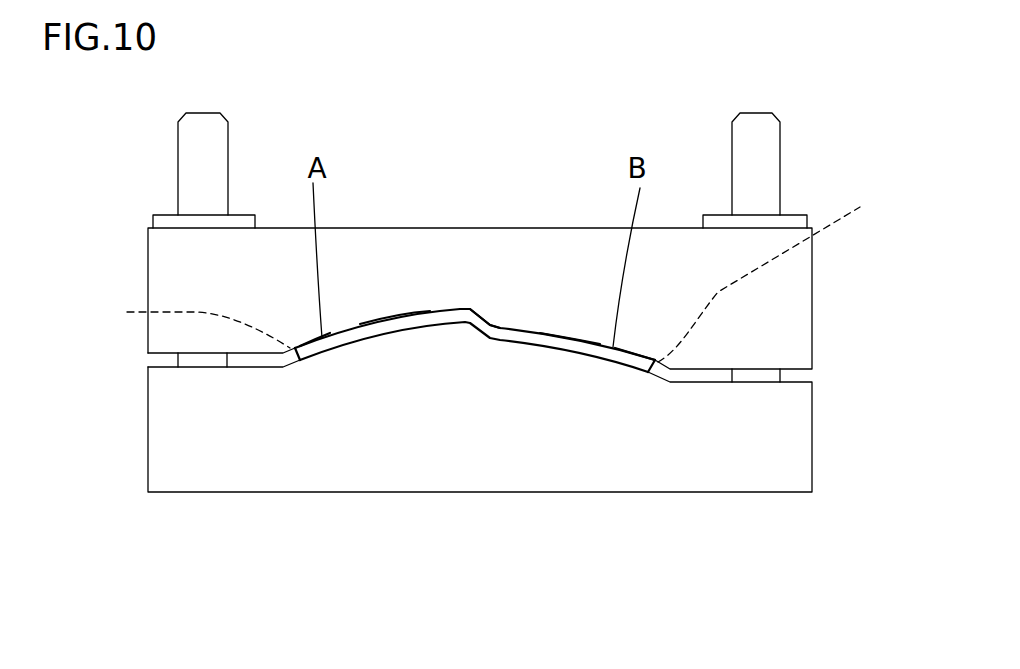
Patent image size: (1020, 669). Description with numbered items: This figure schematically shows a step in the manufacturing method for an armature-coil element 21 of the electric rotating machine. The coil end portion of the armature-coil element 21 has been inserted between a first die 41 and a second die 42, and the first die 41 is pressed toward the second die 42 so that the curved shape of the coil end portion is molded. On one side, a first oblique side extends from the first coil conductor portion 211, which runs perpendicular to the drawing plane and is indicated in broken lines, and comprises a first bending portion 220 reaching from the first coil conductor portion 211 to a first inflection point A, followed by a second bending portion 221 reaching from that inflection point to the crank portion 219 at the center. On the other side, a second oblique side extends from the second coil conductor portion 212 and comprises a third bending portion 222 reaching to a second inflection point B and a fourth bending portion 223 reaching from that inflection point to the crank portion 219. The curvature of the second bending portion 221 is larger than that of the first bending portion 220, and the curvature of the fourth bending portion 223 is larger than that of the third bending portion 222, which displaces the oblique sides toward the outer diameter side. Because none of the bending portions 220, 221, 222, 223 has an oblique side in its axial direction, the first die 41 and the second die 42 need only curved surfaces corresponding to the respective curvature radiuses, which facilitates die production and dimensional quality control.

The armature-coil element 21 is at (515, 343).
The first coil conductor portion 211 is at (182, 320).
The second coil conductor portion 212 is at (782, 270).
The crank portion 219 is at (473, 300).
The first bending portion 220 is at (312, 340).
The second bending portion 221 is at (387, 313).
The third bending portion 222 is at (631, 355).
The fourth bending portion 223 is at (577, 337).
The first die 41 is at (793, 323).
The second die 42 is at (783, 417).